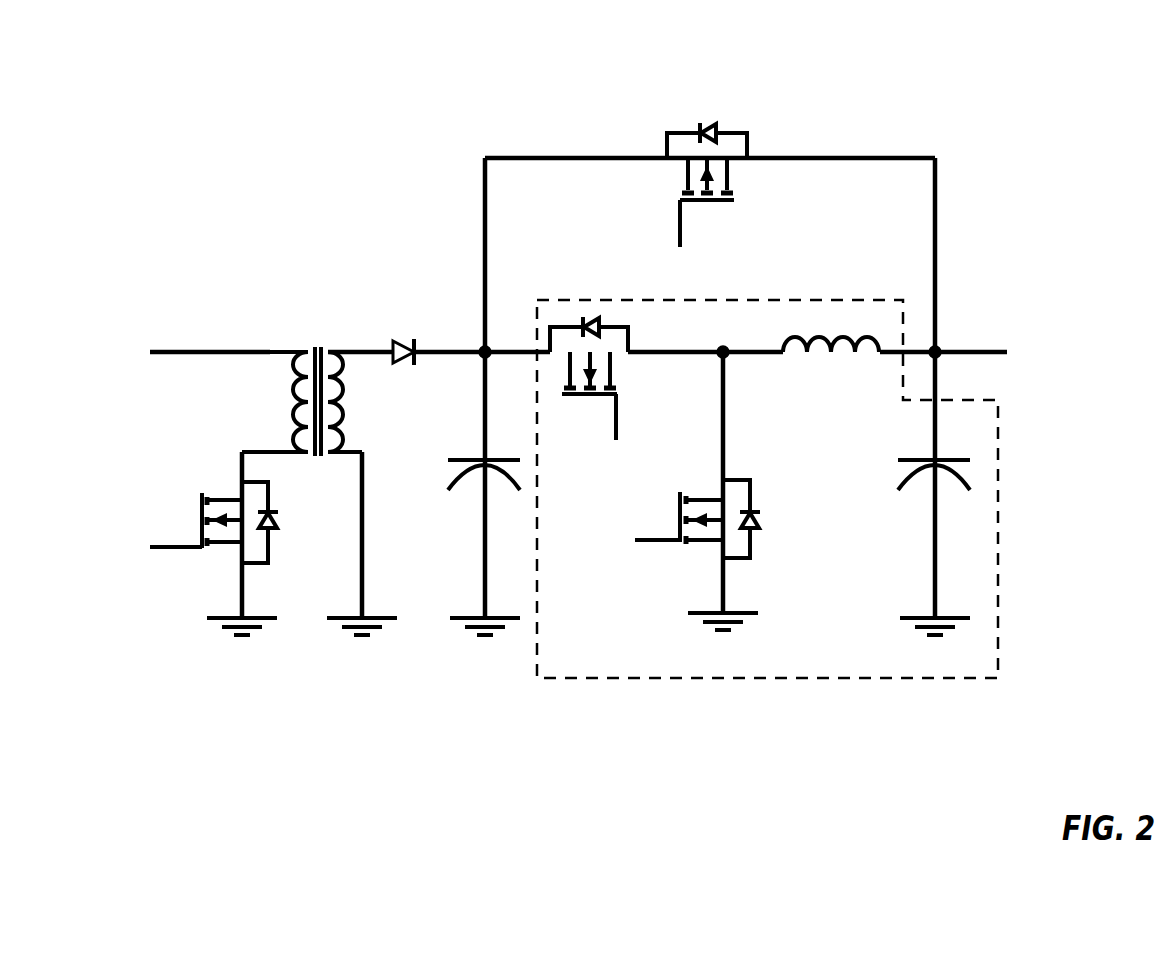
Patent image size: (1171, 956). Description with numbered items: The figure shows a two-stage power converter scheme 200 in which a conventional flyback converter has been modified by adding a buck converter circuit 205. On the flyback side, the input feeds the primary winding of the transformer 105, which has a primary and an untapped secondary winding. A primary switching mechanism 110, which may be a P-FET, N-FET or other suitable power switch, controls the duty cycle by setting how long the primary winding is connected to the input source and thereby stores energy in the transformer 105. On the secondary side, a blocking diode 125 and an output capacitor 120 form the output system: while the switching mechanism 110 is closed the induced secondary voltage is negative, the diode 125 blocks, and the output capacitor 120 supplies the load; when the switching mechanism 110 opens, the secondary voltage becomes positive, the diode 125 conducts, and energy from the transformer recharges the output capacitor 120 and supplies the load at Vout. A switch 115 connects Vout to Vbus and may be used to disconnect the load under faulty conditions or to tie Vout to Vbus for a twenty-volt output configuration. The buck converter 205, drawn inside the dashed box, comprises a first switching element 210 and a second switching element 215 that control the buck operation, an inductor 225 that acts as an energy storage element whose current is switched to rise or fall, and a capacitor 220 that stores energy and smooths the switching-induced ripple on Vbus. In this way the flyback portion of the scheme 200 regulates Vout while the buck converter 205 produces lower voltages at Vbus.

The two-stage power converter scheme 200 is at (188, 78).
The transformer 105 is at (312, 318).
The blocking diode 125 is at (403, 316).
The primary switching mechanism Q0 110 is at (168, 483).
The output capacitor 120 is at (467, 499).
The switch Q9 115 is at (735, 260).
The switching element Q7 210 is at (604, 447).
The switching element Q8 215 is at (649, 562).
The inductor 225 is at (831, 306).
The capacitor 220 is at (917, 499).
The buck converter circuit 205 is at (695, 683).